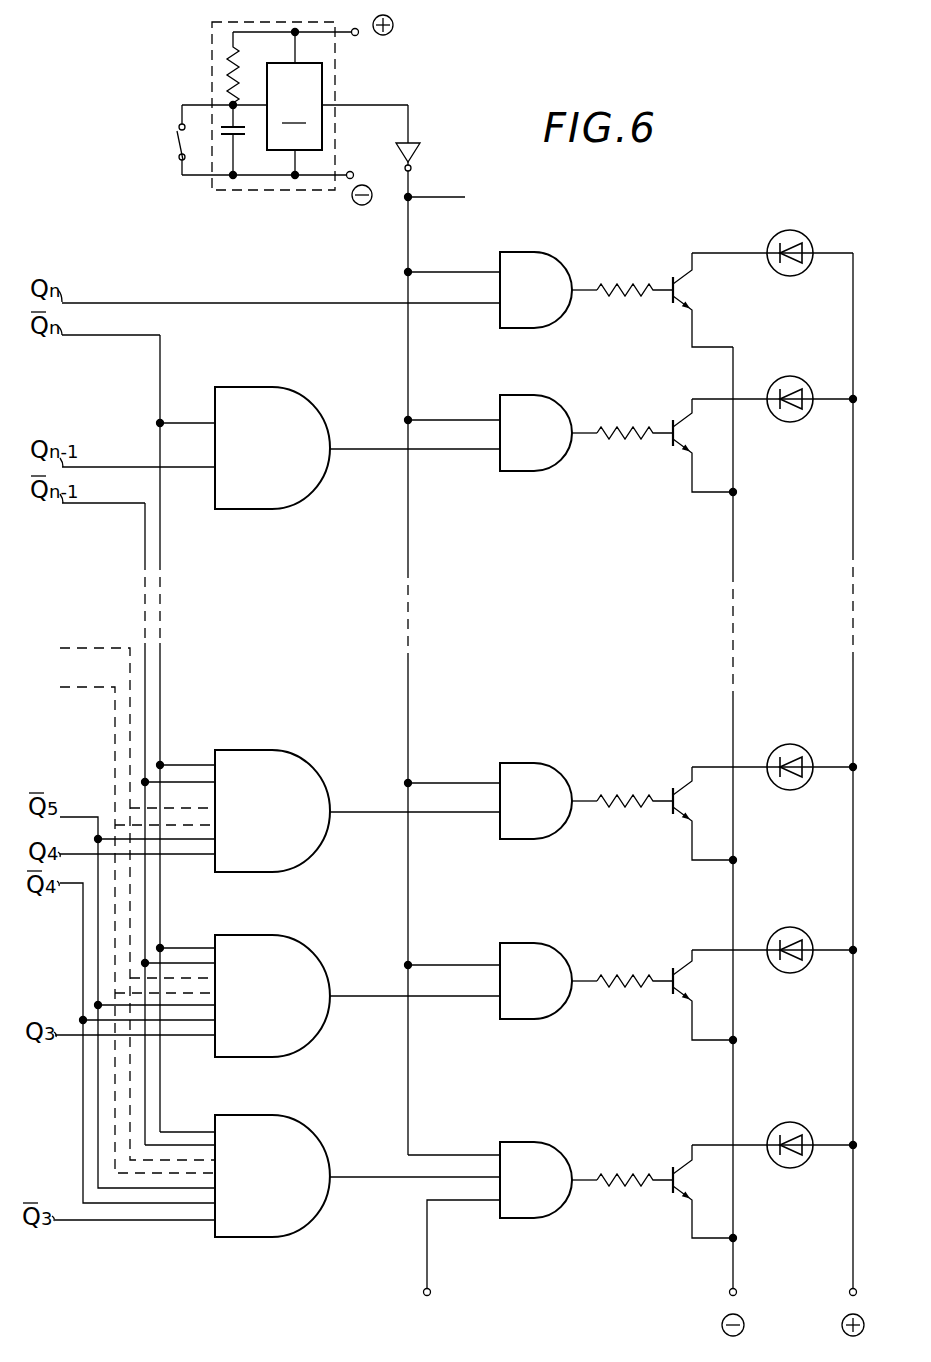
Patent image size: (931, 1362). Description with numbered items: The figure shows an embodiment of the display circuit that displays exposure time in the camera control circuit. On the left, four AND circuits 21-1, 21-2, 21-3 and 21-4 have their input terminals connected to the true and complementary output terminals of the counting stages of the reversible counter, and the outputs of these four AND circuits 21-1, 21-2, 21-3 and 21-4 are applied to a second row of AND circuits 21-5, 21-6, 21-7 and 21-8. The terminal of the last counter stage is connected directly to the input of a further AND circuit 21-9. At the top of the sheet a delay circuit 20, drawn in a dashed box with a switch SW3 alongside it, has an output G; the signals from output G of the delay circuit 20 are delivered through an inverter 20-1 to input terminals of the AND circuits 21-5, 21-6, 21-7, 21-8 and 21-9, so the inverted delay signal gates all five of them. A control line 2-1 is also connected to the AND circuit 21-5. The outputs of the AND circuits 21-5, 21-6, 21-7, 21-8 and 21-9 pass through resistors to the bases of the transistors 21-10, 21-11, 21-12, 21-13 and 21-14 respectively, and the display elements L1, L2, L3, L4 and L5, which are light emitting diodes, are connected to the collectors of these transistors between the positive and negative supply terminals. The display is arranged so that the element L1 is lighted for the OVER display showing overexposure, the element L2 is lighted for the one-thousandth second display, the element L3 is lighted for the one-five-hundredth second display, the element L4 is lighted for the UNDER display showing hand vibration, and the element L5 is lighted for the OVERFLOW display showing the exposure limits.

The delay circuit 20 is at (316, 76).
The inverter 20-1 is at (419, 154).
The output of delay circuit G is at (410, 103).
The switch SW3 is at (177, 146).
The control line 2-1 is at (427, 1260).
The AND circuit 21-1 is at (283, 1102).
The AND circuit 21-2 is at (283, 922).
The AND circuit 21-3 is at (284, 742).
The AND circuit 21-4 is at (268, 506).
The AND circuit 21-5 is at (527, 1142).
The AND circuit 21-6 is at (530, 942).
The AND circuit 21-7 is at (530, 762).
The AND circuit 21-8 is at (535, 397).
The AND circuit 21-9 is at (543, 240).
The transistor 21-10 is at (667, 1189).
The transistor 21-11 is at (665, 989).
The transistor 21-12 is at (665, 809).
The transistor 21-13 is at (665, 455).
The transistor 21-14 is at (667, 279).
The display element L1 is at (787, 1122).
The display element L2 is at (784, 927).
The display element L3 is at (784, 743).
The display element L4 is at (789, 377).
The display element L5 is at (779, 231).